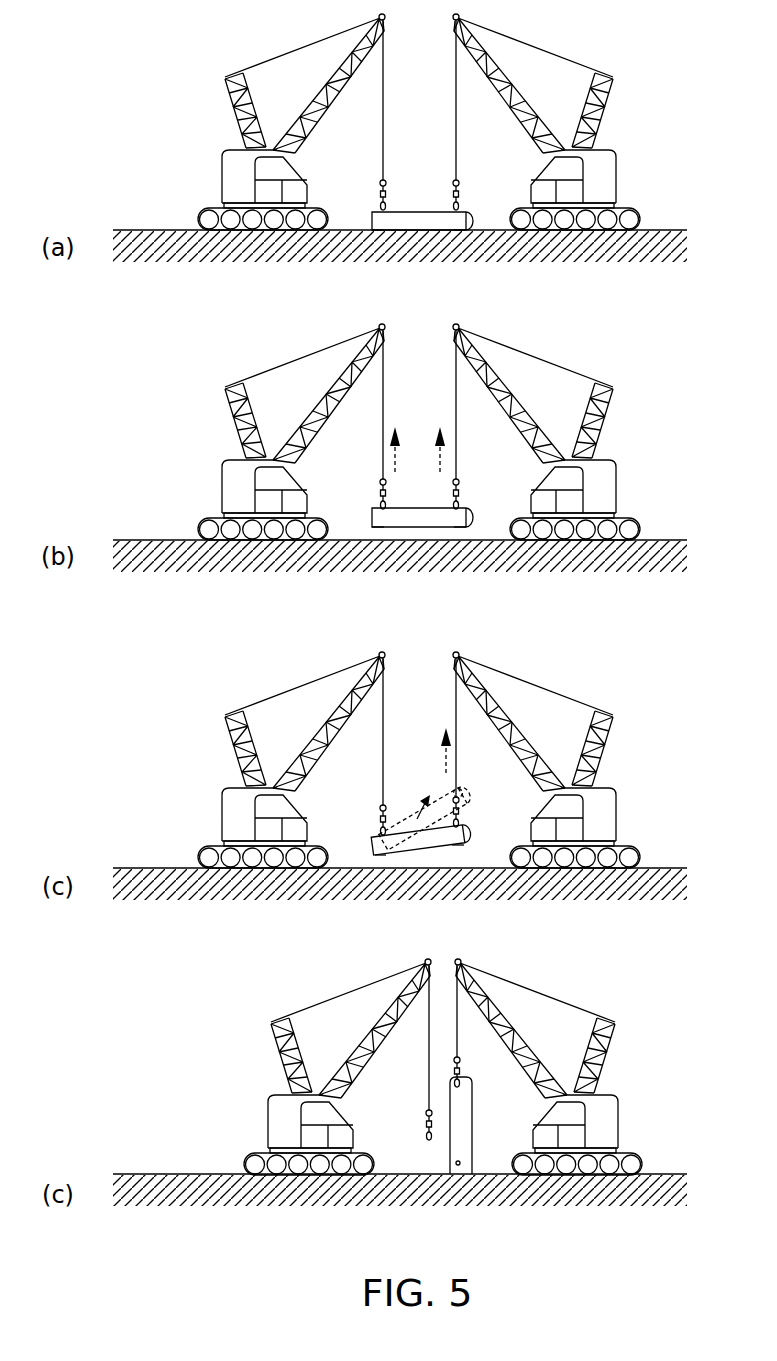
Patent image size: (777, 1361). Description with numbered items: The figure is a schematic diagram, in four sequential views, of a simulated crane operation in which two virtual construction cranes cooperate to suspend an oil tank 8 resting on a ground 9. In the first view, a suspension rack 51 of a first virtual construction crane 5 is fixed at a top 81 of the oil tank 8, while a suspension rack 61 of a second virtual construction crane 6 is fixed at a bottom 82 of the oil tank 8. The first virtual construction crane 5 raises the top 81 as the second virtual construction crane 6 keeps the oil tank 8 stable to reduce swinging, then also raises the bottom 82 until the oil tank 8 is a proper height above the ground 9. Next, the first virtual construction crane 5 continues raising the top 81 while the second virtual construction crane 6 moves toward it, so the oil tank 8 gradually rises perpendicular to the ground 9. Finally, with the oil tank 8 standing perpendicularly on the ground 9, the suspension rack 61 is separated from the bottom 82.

The first virtual construction crane 5 is at (617, 177).
The second virtual construction crane 6 is at (222, 180).
The oil tank 8 is at (420, 212).
The ground 9 is at (122, 540).
The suspension rack 51 is at (461, 203).
The suspension rack 61 is at (378, 204).
The top 81 is at (461, 230).
The bottom 82 is at (377, 230).